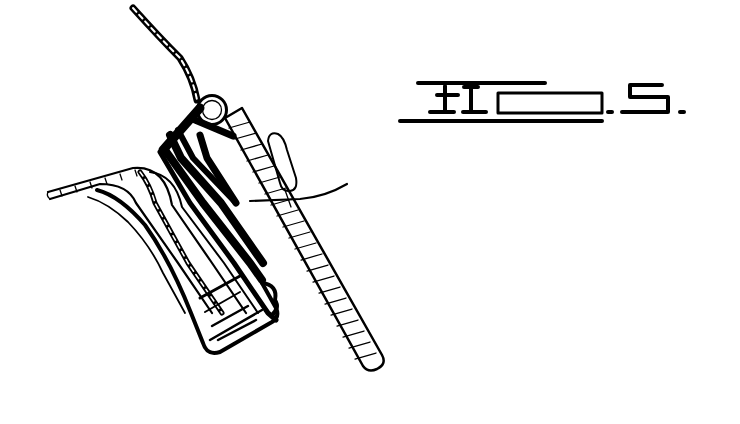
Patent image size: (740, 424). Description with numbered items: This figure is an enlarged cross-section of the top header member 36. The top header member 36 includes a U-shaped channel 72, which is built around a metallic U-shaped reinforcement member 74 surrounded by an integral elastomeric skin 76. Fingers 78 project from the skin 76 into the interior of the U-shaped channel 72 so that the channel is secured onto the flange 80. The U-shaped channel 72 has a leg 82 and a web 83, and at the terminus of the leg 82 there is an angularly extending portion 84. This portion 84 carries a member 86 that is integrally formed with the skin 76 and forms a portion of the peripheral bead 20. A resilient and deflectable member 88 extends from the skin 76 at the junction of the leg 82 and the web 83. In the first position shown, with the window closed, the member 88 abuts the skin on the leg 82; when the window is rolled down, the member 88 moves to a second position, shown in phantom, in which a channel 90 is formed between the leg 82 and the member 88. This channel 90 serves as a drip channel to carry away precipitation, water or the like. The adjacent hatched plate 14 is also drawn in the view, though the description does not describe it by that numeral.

The support plate 14 is at (373, 340).
The peripheral bead 20 is at (234, 75).
The top header member 36 is at (107, 317).
The U-shaped channel 72 is at (215, 335).
The metallic U-shaped reinforcement member 74 is at (213, 352).
The integral elastomeric skin 76 is at (185, 307).
The fingers 78 is at (180, 285).
The flange 80 is at (157, 193).
The leg 82 is at (275, 282).
The web 83 is at (265, 342).
The angularly extending portion 84 is at (160, 147).
The member 86 is at (243, 100).
The resilient and deflectable member 88 is at (236, 168).
The channel 90 is at (315, 188).